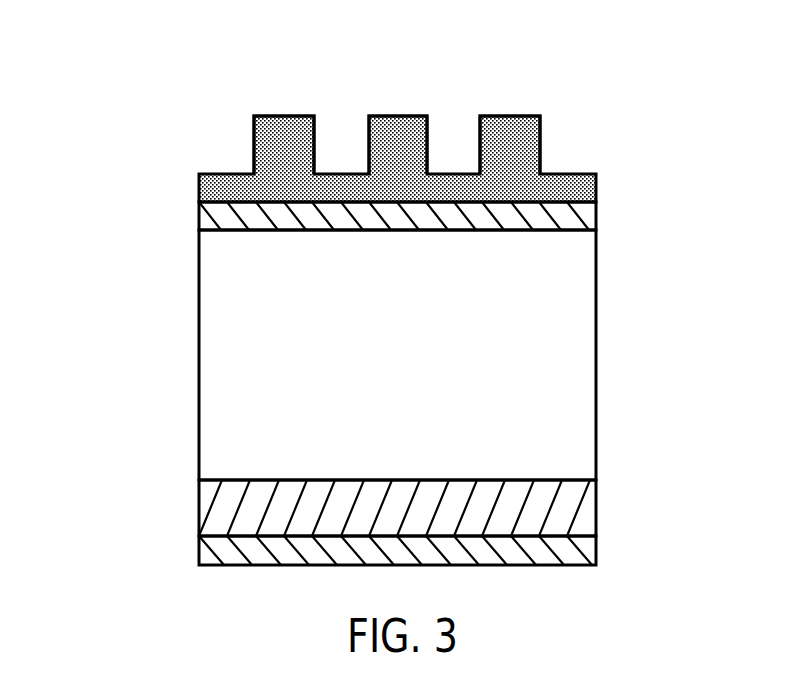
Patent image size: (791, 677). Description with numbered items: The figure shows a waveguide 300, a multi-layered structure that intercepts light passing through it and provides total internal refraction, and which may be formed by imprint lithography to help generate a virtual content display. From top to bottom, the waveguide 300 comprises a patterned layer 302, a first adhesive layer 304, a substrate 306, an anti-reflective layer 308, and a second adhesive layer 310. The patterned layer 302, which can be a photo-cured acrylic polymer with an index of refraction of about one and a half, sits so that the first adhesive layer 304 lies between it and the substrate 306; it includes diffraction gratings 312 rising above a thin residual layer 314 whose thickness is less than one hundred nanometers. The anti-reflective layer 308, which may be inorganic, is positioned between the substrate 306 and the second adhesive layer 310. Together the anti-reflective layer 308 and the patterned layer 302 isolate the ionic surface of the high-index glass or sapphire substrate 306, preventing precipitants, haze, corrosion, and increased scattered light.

The waveguide 300 is at (136, 122).
The patterned layer 302 is at (597, 147).
The first adhesive layer 304 is at (599, 223).
The substrate 306 is at (599, 343).
The anti-reflective layer 308 is at (599, 509).
The second adhesive layer 310 is at (599, 553).
The diffraction gratings 312 is at (540, 103).
The residual layer 314 is at (599, 188).